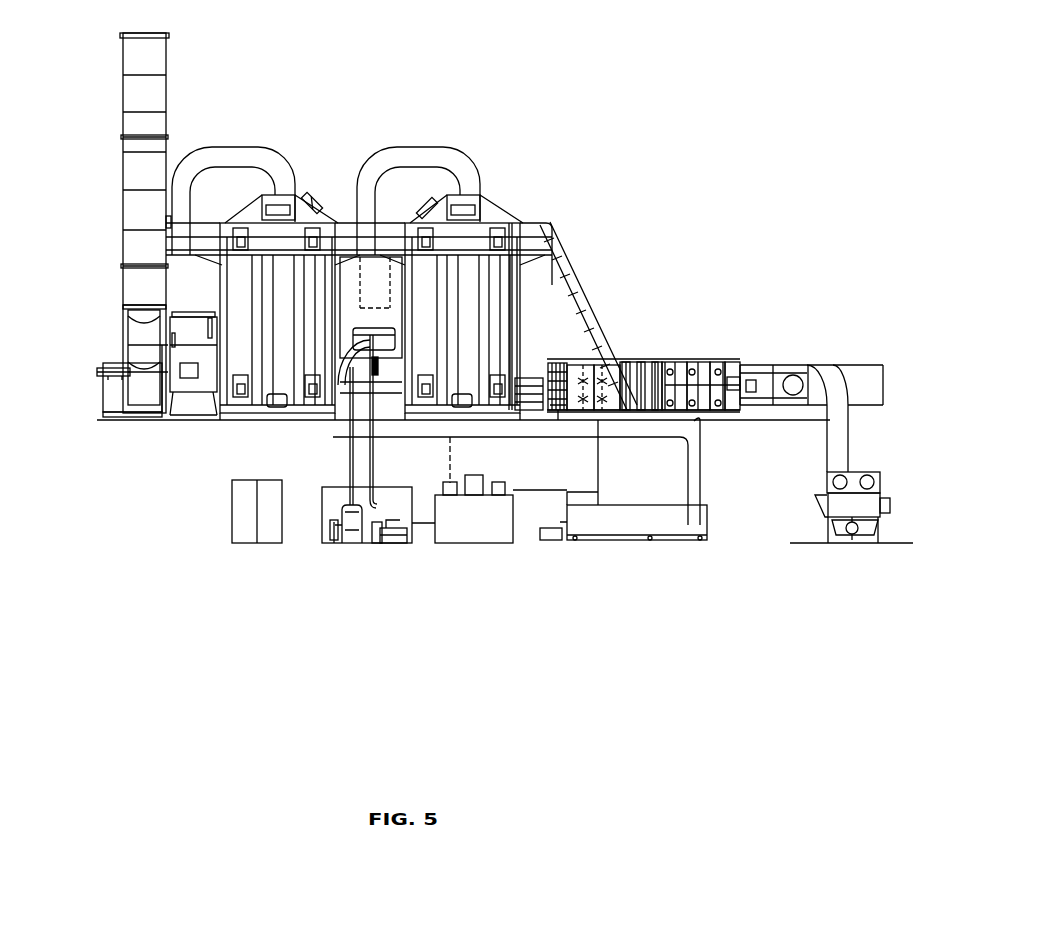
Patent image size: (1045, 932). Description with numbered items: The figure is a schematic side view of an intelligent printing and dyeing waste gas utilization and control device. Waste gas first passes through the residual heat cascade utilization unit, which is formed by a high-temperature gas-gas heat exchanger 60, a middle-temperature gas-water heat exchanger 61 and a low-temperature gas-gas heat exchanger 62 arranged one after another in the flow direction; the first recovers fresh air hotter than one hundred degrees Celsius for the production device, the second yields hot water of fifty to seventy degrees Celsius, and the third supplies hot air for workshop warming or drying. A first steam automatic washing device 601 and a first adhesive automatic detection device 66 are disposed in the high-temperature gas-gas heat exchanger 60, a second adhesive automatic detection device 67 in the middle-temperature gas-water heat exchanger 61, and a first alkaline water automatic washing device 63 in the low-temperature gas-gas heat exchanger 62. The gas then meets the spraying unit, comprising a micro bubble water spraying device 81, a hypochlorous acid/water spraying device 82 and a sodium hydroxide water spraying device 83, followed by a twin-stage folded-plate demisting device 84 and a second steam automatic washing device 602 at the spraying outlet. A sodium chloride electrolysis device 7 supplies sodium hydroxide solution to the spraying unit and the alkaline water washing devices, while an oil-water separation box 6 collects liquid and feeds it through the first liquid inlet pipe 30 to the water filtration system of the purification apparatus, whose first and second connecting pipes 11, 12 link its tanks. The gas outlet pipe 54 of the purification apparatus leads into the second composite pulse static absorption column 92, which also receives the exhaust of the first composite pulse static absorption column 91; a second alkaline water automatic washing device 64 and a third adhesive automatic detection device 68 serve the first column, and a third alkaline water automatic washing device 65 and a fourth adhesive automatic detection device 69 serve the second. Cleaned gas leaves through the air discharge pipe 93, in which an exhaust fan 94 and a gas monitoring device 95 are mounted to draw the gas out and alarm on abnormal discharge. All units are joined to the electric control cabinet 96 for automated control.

The oil-water separation box 6 is at (621, 522).
The sodium chloride electrolysis device 7 is at (473, 504).
The first connecting pipe 11 is at (337, 501).
The second connecting pipe 12 is at (366, 499).
The first liquid inlet pipe 30 is at (411, 538).
The gas outlet pipe 54 is at (346, 471).
The high-temperature gas-gas heat exchanger 60 is at (855, 507).
The first steam automatic washing device 601 is at (868, 517).
The second steam automatic washing device 602 is at (540, 352).
The middle-temperature gas-water heat exchanger 61 is at (680, 363).
The low-temperature gas-gas heat exchanger 62 is at (645, 360).
The first alkaline water automatic washing device 63 is at (622, 347).
The second alkaline water automatic washing device 64 is at (522, 221).
The third alkaline water automatic washing device 65 is at (340, 219).
The first adhesive automatic detection device 66 is at (840, 497).
The second adhesive automatic detection device 67 is at (733, 360).
The third adhesive automatic detection device 68 is at (485, 377).
The fourth adhesive automatic detection device 69 is at (299, 389).
The micro bubble water spraying device 81 is at (597, 323).
The hypochlorous acid/water spraying device 82 is at (577, 340).
The sodium hydroxide water spraying device 83 is at (560, 347).
The demisting device 84 is at (559, 411).
The first composite pulse static absorption column 91 is at (474, 228).
The second composite pulse static absorption column 92 is at (288, 231).
The air discharge pipe 93 is at (121, 212).
The exhaust fan 94 is at (107, 367).
The gas monitoring device 95 is at (163, 213).
The electric control cabinet 96 is at (232, 480).